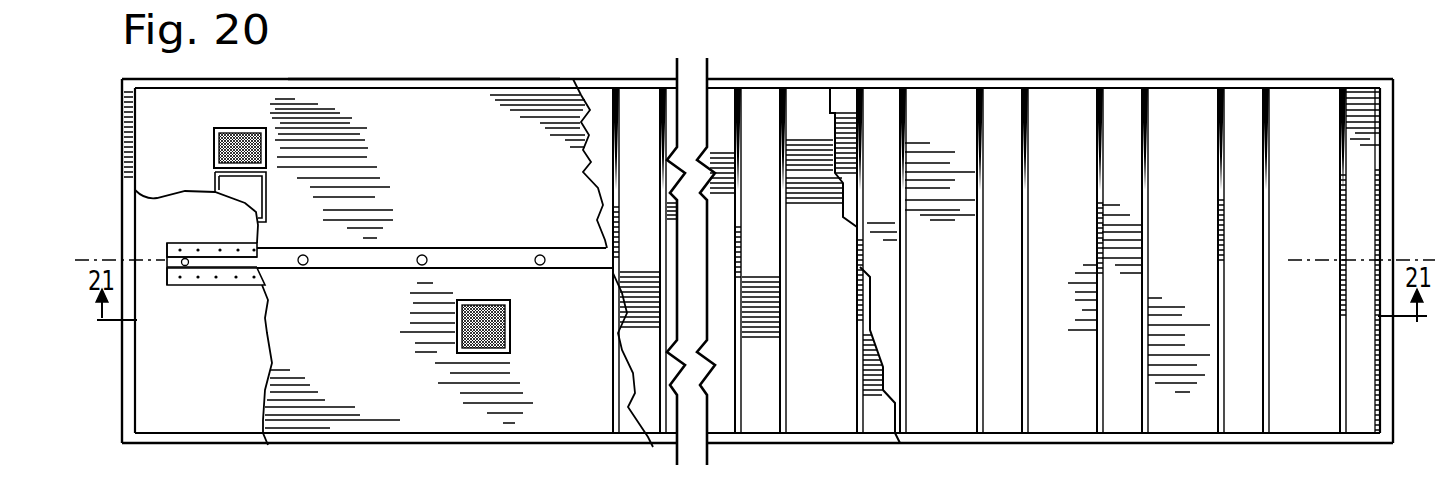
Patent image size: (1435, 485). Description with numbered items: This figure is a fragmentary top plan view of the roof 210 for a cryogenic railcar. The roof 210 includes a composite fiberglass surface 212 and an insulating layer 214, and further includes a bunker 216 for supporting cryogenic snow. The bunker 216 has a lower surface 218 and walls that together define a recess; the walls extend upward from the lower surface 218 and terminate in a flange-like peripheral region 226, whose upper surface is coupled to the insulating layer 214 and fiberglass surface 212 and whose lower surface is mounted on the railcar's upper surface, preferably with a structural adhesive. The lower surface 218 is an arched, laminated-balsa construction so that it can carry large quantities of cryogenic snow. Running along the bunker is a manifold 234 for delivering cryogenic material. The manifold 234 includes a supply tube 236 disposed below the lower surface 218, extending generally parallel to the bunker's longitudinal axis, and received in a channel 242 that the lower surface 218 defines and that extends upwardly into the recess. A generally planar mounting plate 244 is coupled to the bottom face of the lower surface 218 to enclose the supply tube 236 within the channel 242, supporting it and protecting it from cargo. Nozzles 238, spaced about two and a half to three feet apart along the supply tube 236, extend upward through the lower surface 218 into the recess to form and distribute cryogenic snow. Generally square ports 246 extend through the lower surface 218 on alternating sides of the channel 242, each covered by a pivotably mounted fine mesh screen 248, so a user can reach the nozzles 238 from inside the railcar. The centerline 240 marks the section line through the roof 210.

The roof 210 is at (1203, 54).
The composite fiberglass surface 212 is at (1054, 92).
The insulating layer 214 is at (797, 92).
The bunker 216 is at (412, 68).
The lower surface 218 is at (453, 180).
The peripheral region 226 is at (288, 79).
The manifold 234 is at (220, 243).
The supply tube 236 is at (247, 283).
The nozzles 238 is at (541, 253).
The center line of rail 240 is at (1327, 258).
The channel 242 is at (347, 273).
The mounting plate 244 is at (177, 285).
The ports 246 is at (268, 186).
The screen 248 is at (238, 128).